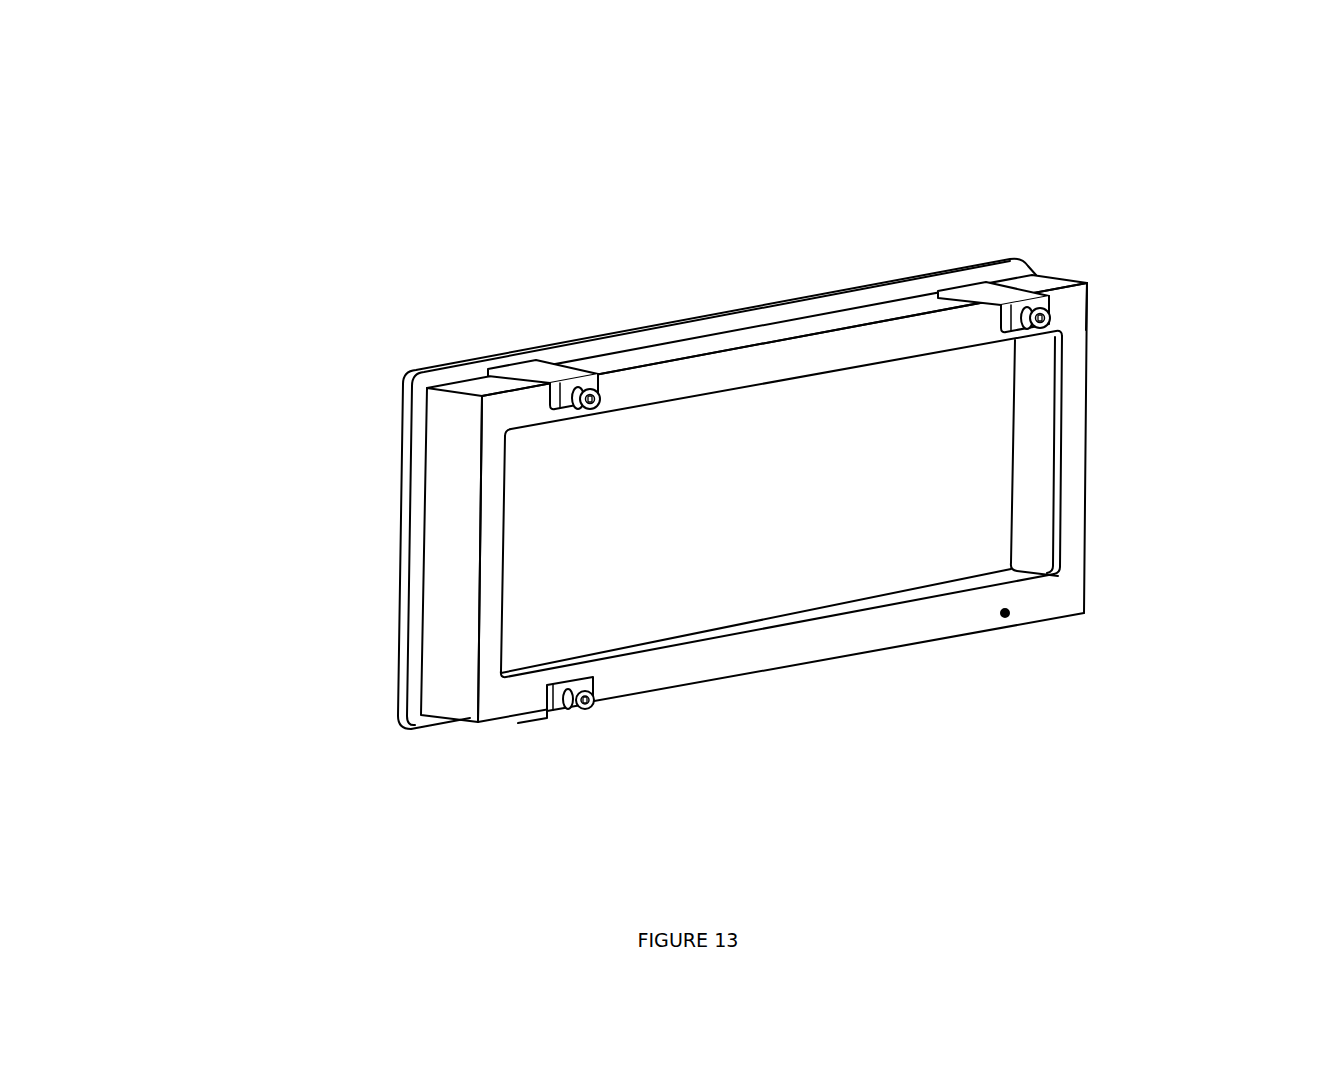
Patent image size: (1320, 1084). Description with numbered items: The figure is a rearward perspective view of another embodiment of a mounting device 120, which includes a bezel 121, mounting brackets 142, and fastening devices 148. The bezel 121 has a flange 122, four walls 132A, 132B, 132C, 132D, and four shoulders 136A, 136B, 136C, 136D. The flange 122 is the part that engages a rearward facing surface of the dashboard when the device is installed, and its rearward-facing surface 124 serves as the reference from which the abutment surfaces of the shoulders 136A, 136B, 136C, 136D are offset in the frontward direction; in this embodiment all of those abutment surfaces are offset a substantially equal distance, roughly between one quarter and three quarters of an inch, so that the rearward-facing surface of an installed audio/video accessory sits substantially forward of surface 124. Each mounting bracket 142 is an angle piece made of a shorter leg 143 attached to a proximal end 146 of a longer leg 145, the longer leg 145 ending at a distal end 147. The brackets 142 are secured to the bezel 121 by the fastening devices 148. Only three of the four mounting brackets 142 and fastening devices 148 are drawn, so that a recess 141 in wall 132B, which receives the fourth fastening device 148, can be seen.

The mounting device 120 is at (640, 203).
The bezel 121 is at (453, 453).
The flange 122 is at (421, 364).
The rearward-facing surface 124 is at (397, 614).
The wall 132A is at (1045, 401).
The wall 132B is at (897, 635).
The wall 132C is at (442, 580).
The wall 132D is at (715, 345).
The shoulder 136A is at (1074, 465).
The shoulder 136B is at (827, 643).
The shoulder 136C is at (490, 660).
The shoulder 136D is at (760, 362).
The recess 141 is at (1008, 613).
The mounting bracket 142 is at (549, 372).
The shorter leg 143 is at (1087, 287).
The longer leg 145 is at (970, 285).
The proximal end 146 is at (547, 720).
The distal end 147 is at (498, 370).
The fastening device 148 is at (590, 392).